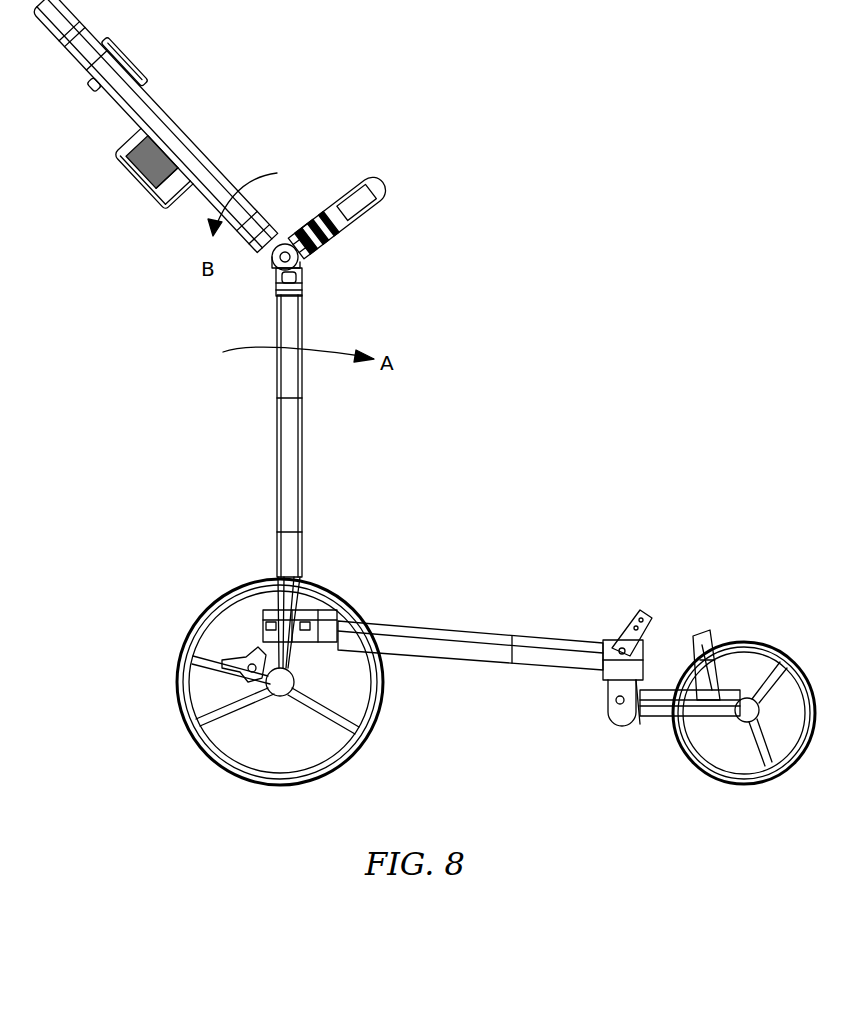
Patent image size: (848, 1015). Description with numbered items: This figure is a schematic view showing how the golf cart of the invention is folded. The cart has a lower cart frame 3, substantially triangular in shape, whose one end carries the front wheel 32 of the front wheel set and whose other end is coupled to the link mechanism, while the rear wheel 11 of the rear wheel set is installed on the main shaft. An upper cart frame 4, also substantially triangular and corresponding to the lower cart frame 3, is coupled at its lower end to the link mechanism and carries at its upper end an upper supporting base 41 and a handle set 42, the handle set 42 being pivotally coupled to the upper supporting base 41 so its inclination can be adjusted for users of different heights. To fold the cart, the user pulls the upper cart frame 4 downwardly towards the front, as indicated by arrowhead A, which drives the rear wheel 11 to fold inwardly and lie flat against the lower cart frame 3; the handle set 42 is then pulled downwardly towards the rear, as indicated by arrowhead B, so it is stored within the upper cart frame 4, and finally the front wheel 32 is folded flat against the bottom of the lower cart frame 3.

The handle set 42 is at (176, 133).
The upper supporting base 41 is at (356, 205).
The upper cart frame 4 is at (288, 462).
The lower cart frame 3 is at (448, 640).
The rear wheel 11 is at (353, 755).
The front wheel 32 is at (687, 757).